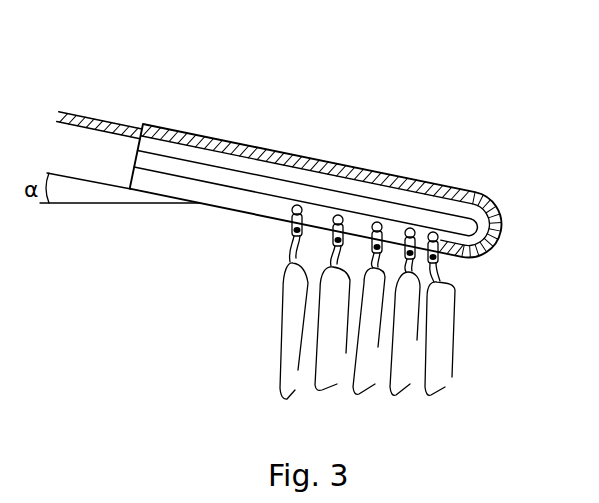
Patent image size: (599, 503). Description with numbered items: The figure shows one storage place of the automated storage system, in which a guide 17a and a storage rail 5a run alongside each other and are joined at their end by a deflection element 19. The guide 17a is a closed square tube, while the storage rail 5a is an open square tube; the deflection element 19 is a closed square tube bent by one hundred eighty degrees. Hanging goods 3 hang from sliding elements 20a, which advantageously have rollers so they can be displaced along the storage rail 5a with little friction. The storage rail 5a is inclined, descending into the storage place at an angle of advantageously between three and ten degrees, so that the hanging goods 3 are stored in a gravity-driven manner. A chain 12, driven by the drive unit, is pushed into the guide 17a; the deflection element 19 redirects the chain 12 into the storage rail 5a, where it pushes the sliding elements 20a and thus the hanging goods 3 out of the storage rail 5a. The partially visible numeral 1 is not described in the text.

The hair extension device 1 is at (594, 208).
The hanging goods 3 is at (402, 350).
The storage rail 5a is at (237, 204).
The chain 12 is at (128, 132).
The guide 17a is at (282, 153).
The deflection element 19 is at (502, 228).
The sliding elements 20a is at (408, 248).